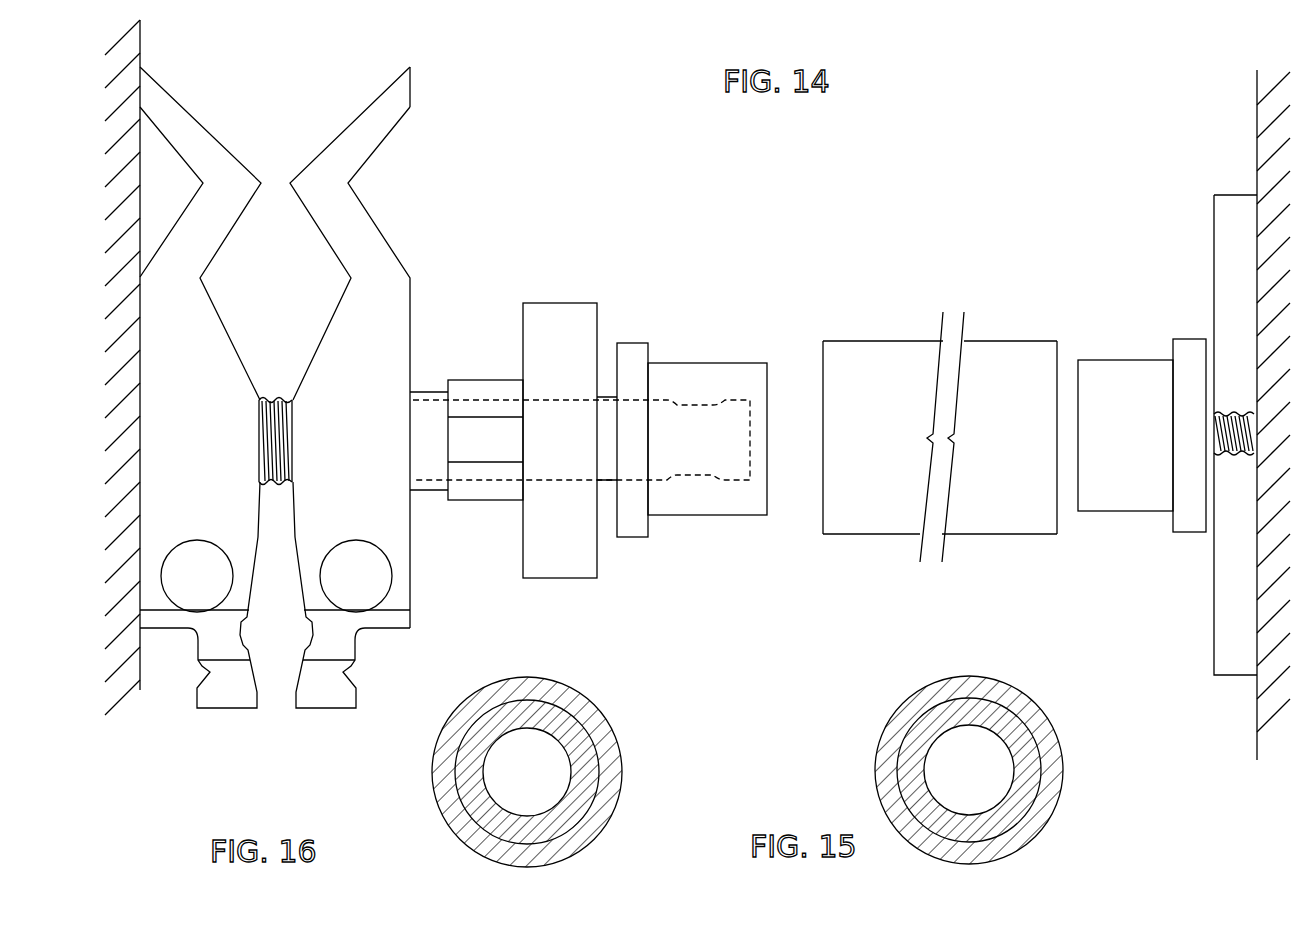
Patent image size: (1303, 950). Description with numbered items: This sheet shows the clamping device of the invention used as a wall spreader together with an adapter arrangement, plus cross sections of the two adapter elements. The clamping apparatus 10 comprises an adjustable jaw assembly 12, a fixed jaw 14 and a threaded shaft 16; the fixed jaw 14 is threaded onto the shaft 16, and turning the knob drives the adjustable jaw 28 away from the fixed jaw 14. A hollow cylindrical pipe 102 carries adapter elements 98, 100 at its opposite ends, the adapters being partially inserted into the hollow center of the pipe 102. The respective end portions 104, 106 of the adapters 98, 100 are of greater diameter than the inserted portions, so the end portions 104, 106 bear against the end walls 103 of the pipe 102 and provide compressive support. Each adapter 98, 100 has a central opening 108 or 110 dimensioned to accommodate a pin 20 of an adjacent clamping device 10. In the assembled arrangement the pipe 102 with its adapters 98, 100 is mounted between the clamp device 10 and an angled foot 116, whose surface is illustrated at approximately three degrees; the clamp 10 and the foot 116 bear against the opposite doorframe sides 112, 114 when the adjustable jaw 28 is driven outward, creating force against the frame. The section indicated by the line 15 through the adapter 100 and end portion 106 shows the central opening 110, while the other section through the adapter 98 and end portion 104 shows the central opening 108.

In FIG. 14, the clamping apparatus 10 is at (407, 387).
In FIG. 14, the adjustable jaw assembly 12 is at (407, 387).
In FIG. 14, the fixed jaw 14 is at (208, 133).
In FIG. 14, the adjustable jaw 28 is at (367, 105).
In FIG. 14, the threaded shaft 16 is at (273, 398).
In FIG. 14, the pin 20 is at (739, 392).
In FIG. 14, the adapter element 98 is at (713, 356).
In FIG. 16, the adapter element 98 is at (534, 757).
In FIG. 14, the adapter element 100 is at (1117, 513).
In FIG. 15, the adapter element 100 is at (982, 671).
In FIG. 14, the hollow cylindrical pipe 102 is at (997, 333).
In FIG. 14, the end walls 103 is at (819, 526).
In FIG. 14, the end portion 104 is at (642, 340).
In FIG. 16, the end portion 104 is at (569, 684).
In FIG. 14, the end portion 106 is at (1197, 335).
In FIG. 15, the end portion 106 is at (893, 707).
In FIG. 16, the central opening 108 is at (523, 773).
In FIG. 15, the central opening 110 is at (970, 771).
In FIG. 14, the frame side 112 is at (144, 46).
In FIG. 14, the frame side 114 is at (1254, 114).
In FIG. 14, the angled foot 116 is at (1213, 196).
In FIG. 14, the section line 15- 15 is at (1185, 312).